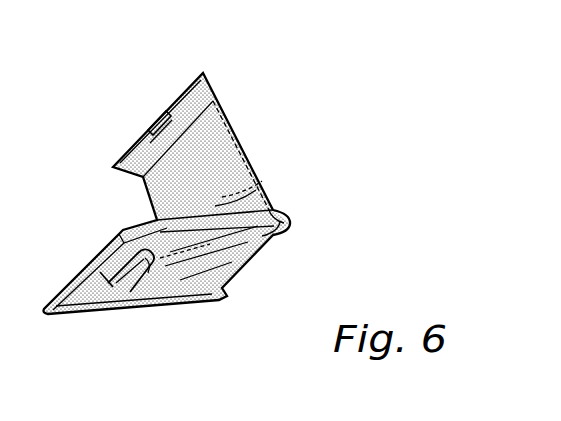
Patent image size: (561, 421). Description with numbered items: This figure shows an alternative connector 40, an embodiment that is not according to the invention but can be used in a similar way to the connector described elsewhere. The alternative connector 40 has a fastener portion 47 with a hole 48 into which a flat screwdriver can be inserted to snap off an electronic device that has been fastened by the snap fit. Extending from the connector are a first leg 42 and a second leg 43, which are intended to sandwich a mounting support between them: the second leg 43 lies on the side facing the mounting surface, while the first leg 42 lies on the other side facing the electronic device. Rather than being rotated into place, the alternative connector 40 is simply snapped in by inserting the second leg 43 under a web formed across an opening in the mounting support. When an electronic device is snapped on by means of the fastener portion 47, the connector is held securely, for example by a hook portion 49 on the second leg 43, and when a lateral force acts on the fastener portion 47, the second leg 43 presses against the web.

The alternative connector 40 is at (340, 109).
The first leg 42 is at (278, 233).
The second leg 43 is at (170, 299).
The fastener portion 47 is at (125, 148).
The hole 48 is at (163, 123).
The hook portion 49 is at (151, 268).